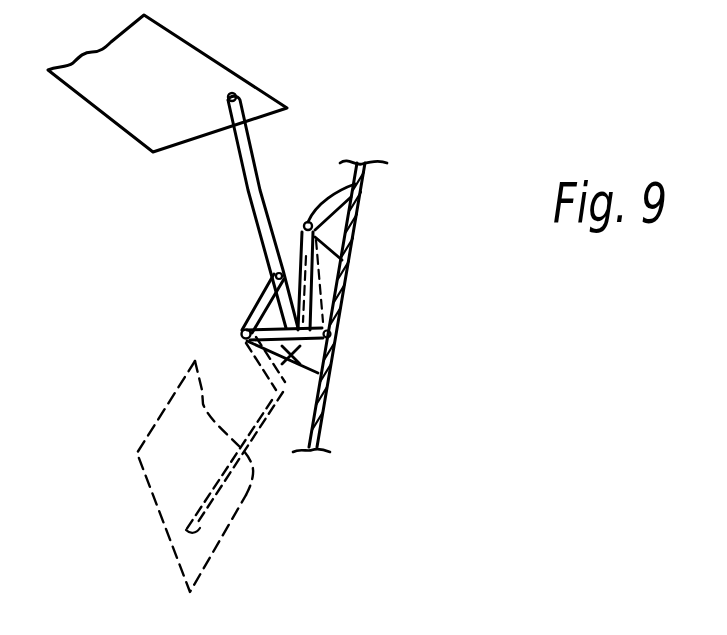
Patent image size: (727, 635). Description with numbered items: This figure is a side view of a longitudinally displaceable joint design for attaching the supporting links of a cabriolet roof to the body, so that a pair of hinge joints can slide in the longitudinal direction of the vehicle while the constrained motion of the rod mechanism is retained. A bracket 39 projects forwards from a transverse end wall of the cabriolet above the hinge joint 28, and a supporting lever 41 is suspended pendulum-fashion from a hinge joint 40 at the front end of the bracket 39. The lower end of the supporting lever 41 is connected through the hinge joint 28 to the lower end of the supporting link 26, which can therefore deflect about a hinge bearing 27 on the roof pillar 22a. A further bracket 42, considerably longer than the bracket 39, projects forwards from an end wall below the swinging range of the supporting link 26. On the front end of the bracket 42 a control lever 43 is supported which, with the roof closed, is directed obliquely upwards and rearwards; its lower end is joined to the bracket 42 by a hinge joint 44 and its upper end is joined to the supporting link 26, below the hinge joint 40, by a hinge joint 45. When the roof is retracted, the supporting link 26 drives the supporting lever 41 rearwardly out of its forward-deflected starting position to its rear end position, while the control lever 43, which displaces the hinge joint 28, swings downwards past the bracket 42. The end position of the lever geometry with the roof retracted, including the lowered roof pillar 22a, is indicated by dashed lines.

The roof pillar 22a is at (114, 92).
The supporting link 26 is at (248, 172).
The hinge bearing 27 is at (237, 93).
The hinge joint 28 is at (322, 333).
The bracket 39 is at (333, 230).
The hinge joint 40 is at (364, 167).
The supporting lever 41 is at (300, 273).
The further bracket 42 is at (325, 400).
The control lever 43 is at (255, 308).
The hinge joint 44 is at (243, 336).
The hinge joint 45 is at (272, 270).